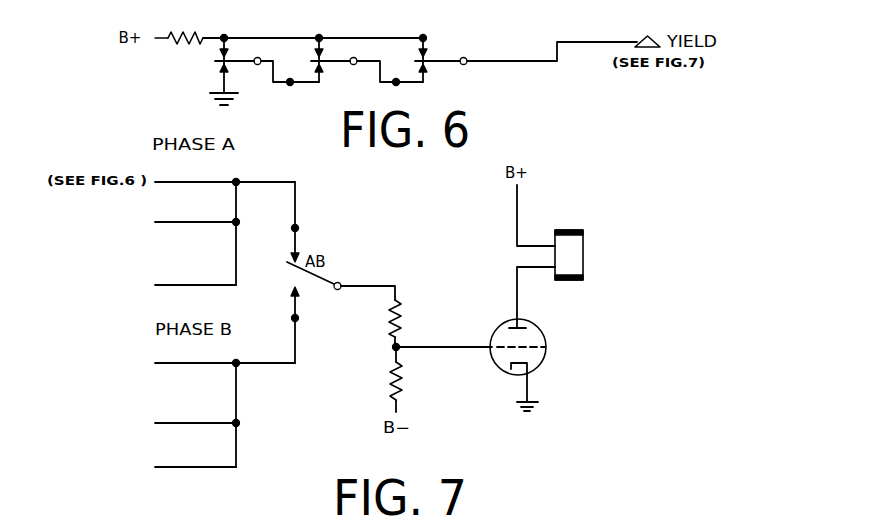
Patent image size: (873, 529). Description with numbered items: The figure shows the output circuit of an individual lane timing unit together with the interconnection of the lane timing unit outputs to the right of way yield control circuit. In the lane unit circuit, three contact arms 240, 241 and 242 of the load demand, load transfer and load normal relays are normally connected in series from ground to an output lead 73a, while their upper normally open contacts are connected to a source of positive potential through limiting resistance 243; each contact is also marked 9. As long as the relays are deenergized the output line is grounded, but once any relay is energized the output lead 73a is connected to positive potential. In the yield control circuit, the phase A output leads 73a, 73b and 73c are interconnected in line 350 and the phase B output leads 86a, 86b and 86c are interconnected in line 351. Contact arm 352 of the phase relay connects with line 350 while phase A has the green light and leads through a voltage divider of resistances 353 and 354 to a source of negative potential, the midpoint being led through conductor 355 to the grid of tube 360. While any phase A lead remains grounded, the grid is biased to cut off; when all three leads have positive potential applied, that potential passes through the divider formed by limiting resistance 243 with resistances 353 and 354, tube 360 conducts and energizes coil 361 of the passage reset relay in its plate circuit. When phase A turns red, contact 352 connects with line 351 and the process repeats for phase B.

In FIG. 6, the limiting resistance 243 is at (186, 33).
In FIG. 6, the contact arm of relay LDS 240 is at (215, 64).
In FIG. 6, the contact arm of relay LTS 241 is at (315, 65).
In FIG. 6, the contact arm of relay LNS 242 is at (420, 67).
In FIG. 6, the contact 9 is at (338, 72).
In FIG. 6, the output lead 73a is at (531, 62).
In FIG. 7, the output lead 73a is at (181, 181).
In FIG. 7, the output lead 73b is at (181, 221).
In FIG. 7, the output lead 73c is at (181, 284).
In FIG. 7, the output lead 86a is at (181, 361).
In FIG. 7, the output lead 86b is at (181, 419).
In FIG. 7, the output lead 86c is at (181, 466).
In FIG. 7, the line 350 is at (297, 204).
In FIG. 7, the line 351 is at (297, 344).
In FIG. 7, the relay contact arm 352 is at (333, 278).
In FIG. 7, the resistance 353 is at (401, 311).
In FIG. 7, the resistance 354 is at (402, 387).
In FIG. 7, the conductor 355 is at (425, 346).
In FIG. 7, the tube 360 is at (516, 304).
In FIG. 7, the coil of passage reset relay PR 361 is at (584, 251).